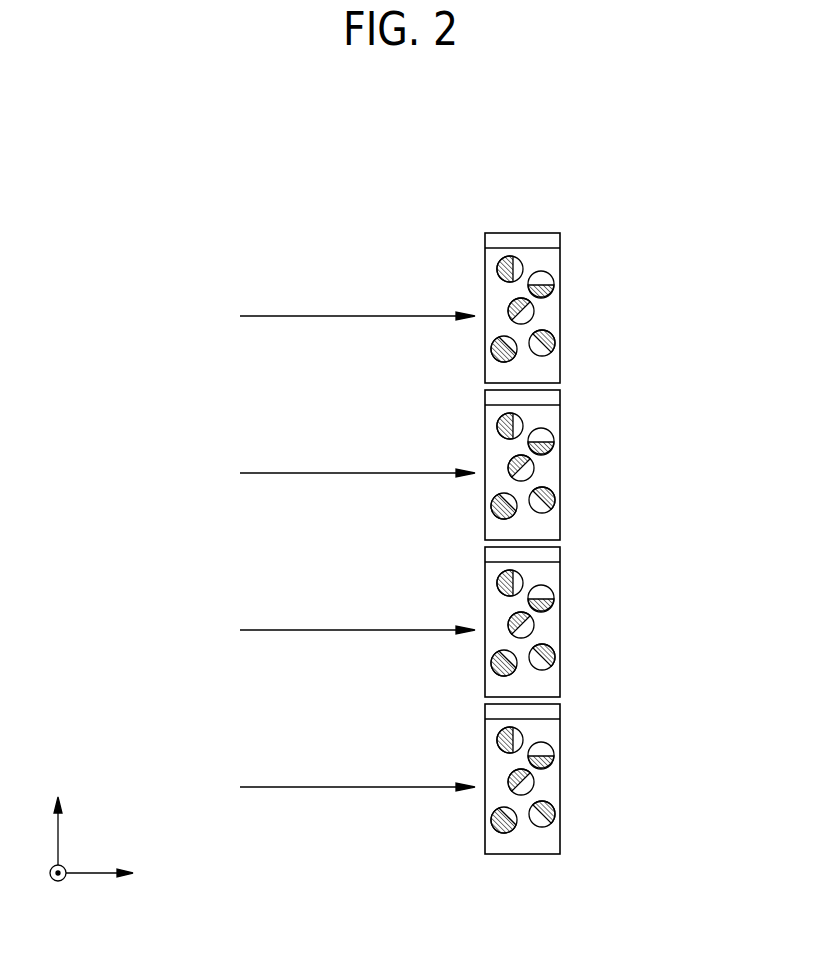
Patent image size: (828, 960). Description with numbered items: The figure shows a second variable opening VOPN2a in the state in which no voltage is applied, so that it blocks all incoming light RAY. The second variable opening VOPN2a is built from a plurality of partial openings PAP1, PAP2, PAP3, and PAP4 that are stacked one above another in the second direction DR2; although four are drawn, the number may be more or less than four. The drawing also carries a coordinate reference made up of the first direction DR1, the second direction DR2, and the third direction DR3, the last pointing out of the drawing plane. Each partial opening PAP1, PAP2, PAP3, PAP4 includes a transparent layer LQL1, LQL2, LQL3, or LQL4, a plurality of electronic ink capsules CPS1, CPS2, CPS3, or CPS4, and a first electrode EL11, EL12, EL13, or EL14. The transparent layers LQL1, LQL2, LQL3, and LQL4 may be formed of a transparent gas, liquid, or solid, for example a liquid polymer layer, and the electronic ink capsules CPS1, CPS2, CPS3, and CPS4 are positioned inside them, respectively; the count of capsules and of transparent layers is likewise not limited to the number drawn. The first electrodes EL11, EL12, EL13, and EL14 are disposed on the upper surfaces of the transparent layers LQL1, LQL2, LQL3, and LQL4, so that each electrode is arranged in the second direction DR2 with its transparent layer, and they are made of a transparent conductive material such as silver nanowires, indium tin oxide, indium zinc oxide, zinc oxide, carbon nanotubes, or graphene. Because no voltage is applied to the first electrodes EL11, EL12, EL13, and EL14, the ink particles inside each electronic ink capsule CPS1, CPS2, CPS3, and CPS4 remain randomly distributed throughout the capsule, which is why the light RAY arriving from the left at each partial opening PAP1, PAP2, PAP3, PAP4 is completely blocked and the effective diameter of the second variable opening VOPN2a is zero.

The second variable opening VOPN2a is at (563, 172).
The first partial opening PAP1 is at (638, 233).
The second partial opening PAP2 is at (592, 464).
The third partial opening PAP3 is at (592, 621).
The fourth partial opening PAP4 is at (592, 778).
The first electrode EL11 is at (555, 240).
The first electrode EL12 is at (558, 402).
The first electrode EL13 is at (558, 559).
The first electrode EL14 is at (558, 716).
The electronic ink capsules CPS1 is at (555, 278).
The electronic ink capsules CPS2 is at (562, 466).
The electronic ink capsules CPS3 is at (562, 623).
The electronic ink capsules CPS4 is at (562, 780).
The transparent layer LQL1 is at (555, 313).
The transparent layer LQL2 is at (557, 465).
The transparent layer LQL3 is at (557, 622).
The transparent layer LQL4 is at (557, 779).
The light RAY is at (313, 551).
The first direction DR1 is at (121, 876).
The second direction DR2 is at (58, 817).
The third direction DR3 is at (58, 890).